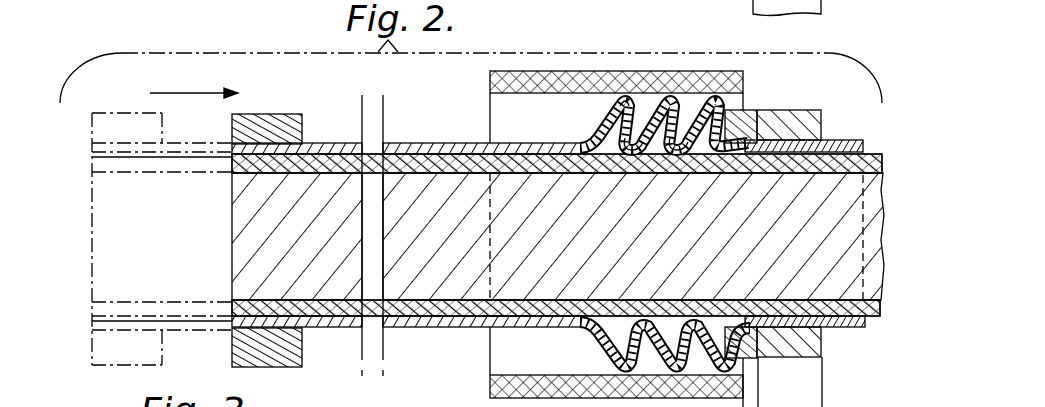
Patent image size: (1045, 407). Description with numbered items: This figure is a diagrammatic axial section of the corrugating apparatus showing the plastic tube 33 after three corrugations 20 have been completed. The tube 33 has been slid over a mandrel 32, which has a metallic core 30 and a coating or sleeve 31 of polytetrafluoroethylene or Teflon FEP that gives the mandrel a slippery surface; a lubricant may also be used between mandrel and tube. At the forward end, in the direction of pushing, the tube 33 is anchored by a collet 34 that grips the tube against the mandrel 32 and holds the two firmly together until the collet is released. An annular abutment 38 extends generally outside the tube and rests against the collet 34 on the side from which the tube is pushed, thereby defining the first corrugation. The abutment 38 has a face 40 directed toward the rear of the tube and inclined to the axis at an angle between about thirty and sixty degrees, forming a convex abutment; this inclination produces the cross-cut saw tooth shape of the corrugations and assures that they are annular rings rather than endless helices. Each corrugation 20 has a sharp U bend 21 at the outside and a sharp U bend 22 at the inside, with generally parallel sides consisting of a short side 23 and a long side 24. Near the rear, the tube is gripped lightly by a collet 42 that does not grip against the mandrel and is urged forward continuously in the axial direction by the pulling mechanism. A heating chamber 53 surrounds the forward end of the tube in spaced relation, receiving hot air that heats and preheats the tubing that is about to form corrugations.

The corrugations 20 is at (606, 110).
The sharp U bends at the outside 21 is at (629, 95).
The sharp U bends at the inside 22 is at (622, 322).
The short side 23 is at (683, 152).
The long side 24 is at (637, 152).
The metallic core 30 is at (582, 249).
The coating or sleeve 31 is at (404, 173).
The mandrel 32 is at (324, 146).
The plastic tube 33 is at (446, 137).
The collet 34 is at (790, 112).
The annular abutment 38 is at (733, 126).
The abutment face 40 is at (752, 153).
The collet 42 is at (280, 108).
The heating chamber 53 is at (563, 73).